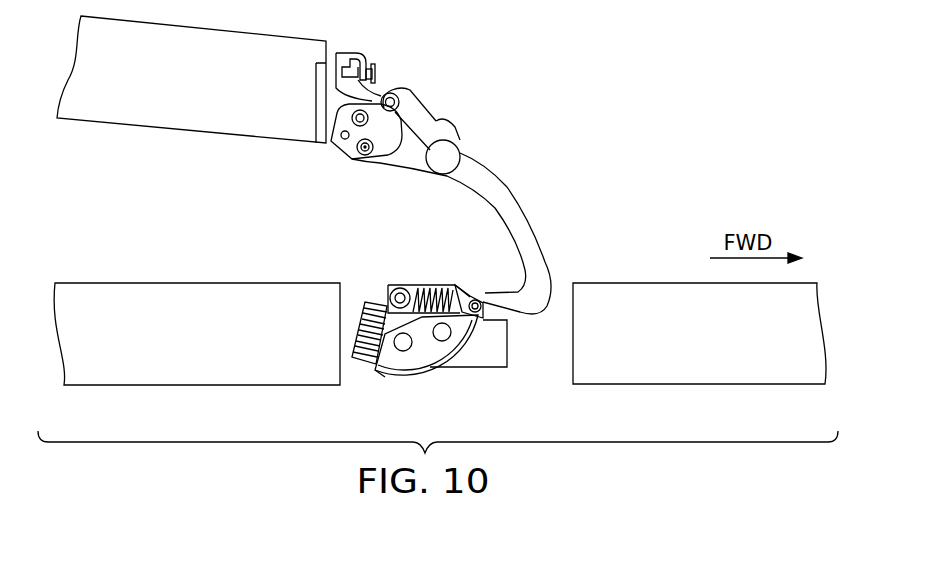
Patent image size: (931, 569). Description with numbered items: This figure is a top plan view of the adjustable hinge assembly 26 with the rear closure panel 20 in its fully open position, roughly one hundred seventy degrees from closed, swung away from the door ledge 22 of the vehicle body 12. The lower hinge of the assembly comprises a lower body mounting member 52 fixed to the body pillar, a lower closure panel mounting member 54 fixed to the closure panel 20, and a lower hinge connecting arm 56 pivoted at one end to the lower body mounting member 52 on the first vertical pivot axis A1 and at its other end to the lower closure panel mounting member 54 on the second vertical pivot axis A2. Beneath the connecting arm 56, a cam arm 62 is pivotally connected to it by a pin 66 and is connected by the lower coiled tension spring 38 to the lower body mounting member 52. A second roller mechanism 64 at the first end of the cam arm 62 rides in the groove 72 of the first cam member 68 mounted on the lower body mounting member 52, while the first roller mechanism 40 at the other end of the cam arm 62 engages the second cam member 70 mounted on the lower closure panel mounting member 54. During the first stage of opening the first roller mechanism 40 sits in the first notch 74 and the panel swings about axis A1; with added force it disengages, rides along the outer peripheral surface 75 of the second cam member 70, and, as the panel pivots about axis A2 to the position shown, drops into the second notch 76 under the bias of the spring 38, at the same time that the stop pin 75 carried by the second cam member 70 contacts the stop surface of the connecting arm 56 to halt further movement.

The vehicle body 12 is at (187, 385).
The rear closure panel 20 is at (137, 125).
The door ledge 22 is at (735, 384).
The adjustable hinge assembly 26 is at (566, 198).
The lower coiled tension spring 38 is at (438, 288).
The first roller mechanism 40 is at (420, 100).
The lower body mounting member 52 is at (488, 380).
The lower closure panel mounting member 54 is at (319, 160).
The lower hinge connecting arm 56 is at (472, 205).
The cam arm 62 is at (432, 113).
The second roller mechanism 64 is at (517, 320).
The pin 66 is at (460, 151).
The first cam member 68 is at (423, 352).
The second cam member 70 is at (373, 153).
The groove 72 is at (381, 377).
The first notch 74 is at (351, 118).
The stop pin 75 is at (350, 103).
The second notch 76 is at (392, 92).
The first vertical pivot axis A1 is at (399, 288).
The second vertical pivot axis A2 is at (364, 157).